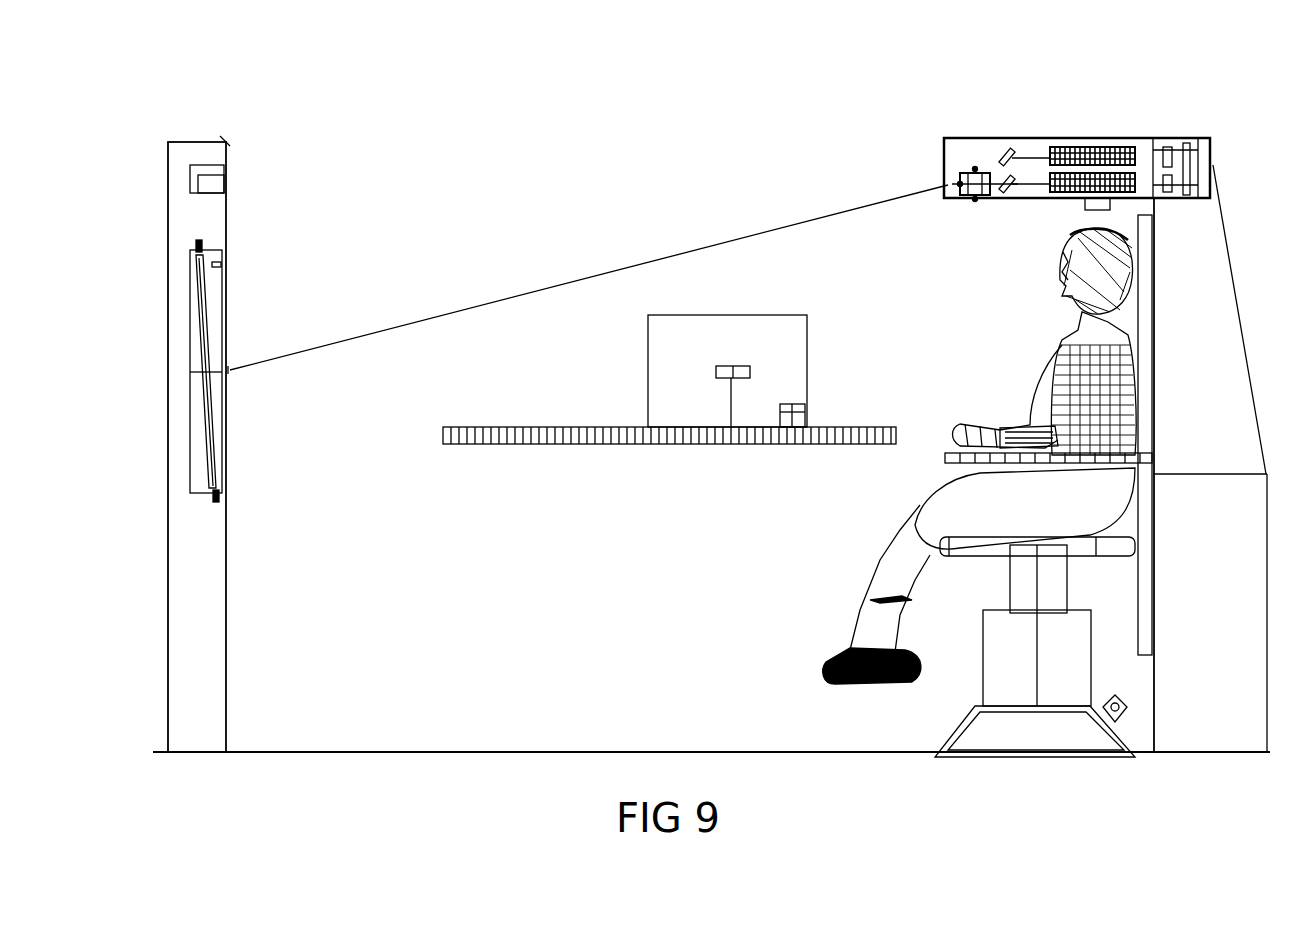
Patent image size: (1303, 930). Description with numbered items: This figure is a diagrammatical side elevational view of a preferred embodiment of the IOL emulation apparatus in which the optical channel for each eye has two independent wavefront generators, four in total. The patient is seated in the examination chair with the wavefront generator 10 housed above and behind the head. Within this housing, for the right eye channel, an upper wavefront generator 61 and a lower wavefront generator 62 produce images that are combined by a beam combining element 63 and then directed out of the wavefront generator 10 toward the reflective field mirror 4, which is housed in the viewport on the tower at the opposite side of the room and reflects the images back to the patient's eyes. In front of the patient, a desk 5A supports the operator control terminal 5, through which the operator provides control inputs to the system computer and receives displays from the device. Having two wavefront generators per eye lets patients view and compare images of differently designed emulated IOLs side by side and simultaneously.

The field mirror 4 is at (230, 444).
The operator control terminal 5 is at (695, 358).
The desk 5A is at (846, 413).
The wavefront generator 10 is at (1098, 254).
The upper wavefront generator 61 is at (1116, 147).
The lower wavefront generator 62 is at (1067, 180).
The beam combining element 63 is at (1012, 190).